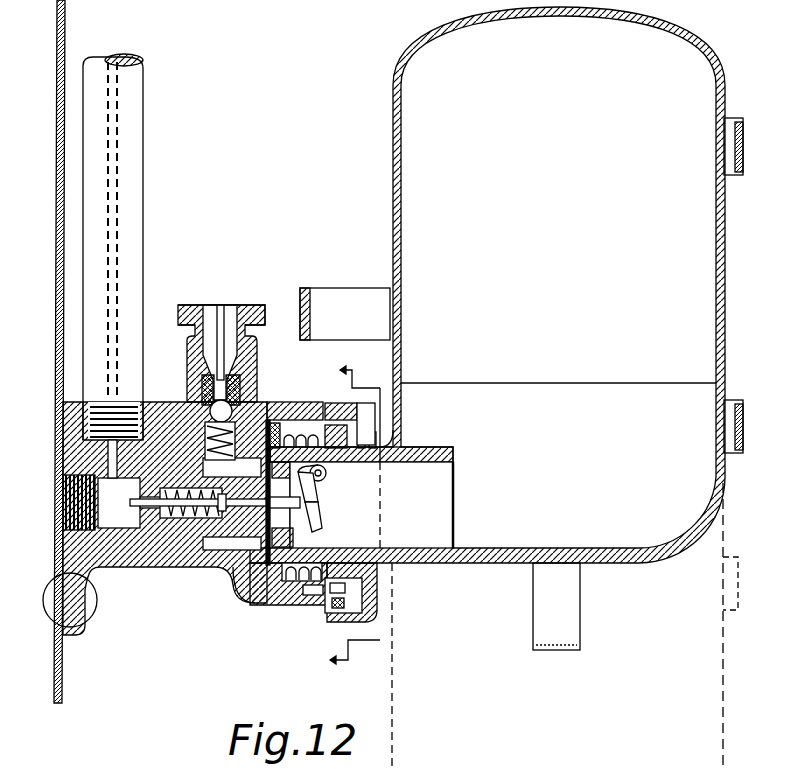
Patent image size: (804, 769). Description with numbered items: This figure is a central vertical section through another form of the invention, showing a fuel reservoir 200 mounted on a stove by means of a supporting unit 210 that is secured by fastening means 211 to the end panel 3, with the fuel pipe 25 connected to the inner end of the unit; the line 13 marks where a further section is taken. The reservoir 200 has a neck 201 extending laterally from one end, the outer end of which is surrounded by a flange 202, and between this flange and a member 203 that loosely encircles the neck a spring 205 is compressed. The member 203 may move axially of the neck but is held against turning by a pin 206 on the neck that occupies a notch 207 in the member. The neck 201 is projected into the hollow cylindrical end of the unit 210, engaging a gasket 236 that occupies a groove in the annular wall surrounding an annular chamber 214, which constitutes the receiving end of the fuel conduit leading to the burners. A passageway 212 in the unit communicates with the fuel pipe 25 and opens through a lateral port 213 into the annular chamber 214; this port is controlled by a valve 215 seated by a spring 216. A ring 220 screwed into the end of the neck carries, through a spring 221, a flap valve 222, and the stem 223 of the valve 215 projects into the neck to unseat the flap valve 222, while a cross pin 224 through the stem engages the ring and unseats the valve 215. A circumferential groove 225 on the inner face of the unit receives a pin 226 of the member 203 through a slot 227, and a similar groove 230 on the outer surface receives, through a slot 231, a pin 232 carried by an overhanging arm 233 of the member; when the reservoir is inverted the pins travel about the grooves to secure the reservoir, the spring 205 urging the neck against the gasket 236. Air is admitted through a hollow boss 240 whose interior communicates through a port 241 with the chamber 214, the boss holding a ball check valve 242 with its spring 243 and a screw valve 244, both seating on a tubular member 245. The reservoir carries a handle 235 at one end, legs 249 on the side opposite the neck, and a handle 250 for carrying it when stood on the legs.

The end panel 3 is at (57, 378).
The fuel pipe 25 is at (143, 237).
The reservoir 200 is at (393, 203).
The legs 249 is at (733, 176).
The handle 235 is at (580, 633).
The handle 250 is at (348, 298).
The unit 210 is at (153, 556).
The fastening means 211 is at (95, 607).
The spring 216 is at (187, 525).
The passageway 212 is at (175, 478).
The valve 215 is at (212, 520).
The lateral port 213 is at (225, 512).
The port 241 is at (205, 462).
The hollow boss 240 is at (190, 350).
The screw valve 244 is at (252, 305).
The ball check valve 242 is at (205, 388).
The spring 243 is at (210, 420).
The tubular member 245 is at (255, 395).
The annular chamber 214 is at (268, 440).
The groove 230 is at (336, 420).
The slot 231 is at (356, 430).
The pin 226 is at (372, 432).
The pin 206 is at (380, 440).
The notch 207 is at (386, 452).
The neck 201 is at (371, 505).
The spring 221 is at (328, 478).
The cross pin 224 is at (322, 490).
The flap valve 222 is at (322, 517).
The stem 223 is at (302, 504).
The ring 220 is at (298, 540).
The flange 202 is at (264, 605).
The gasket 236 is at (242, 595).
The spring 205 is at (298, 582).
The circumferential groove 225 is at (318, 600).
The member 203 is at (370, 566).
The overhanging arm 233 is at (370, 612).
The slot 227 is at (362, 588).
The pin 232 is at (365, 602).
The section line 13 is at (361, 558).